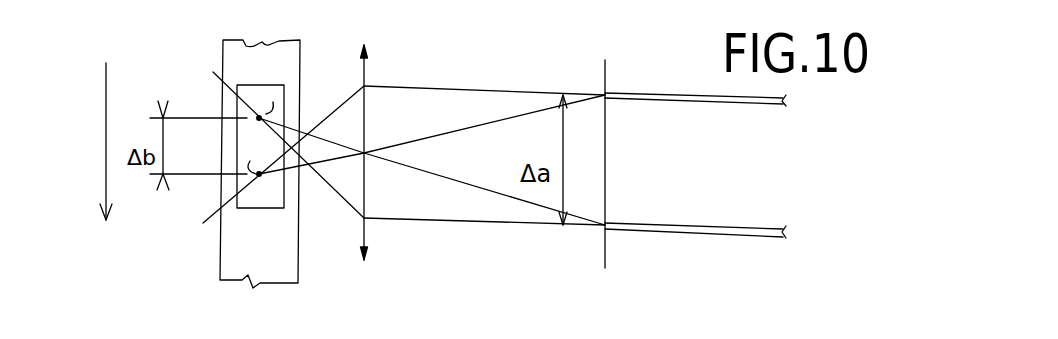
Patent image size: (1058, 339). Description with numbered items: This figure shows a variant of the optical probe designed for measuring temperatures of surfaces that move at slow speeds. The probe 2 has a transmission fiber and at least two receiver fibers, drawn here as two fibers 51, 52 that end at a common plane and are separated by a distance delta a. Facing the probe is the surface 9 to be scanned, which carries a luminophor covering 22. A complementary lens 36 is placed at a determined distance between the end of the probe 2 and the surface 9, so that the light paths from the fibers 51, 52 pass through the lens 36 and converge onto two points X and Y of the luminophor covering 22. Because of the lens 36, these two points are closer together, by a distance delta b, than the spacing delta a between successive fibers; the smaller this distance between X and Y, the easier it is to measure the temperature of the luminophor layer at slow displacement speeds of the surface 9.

The probe 2 is at (682, 168).
The surface to be scanned 9 is at (272, 265).
The luminophor covering 22 is at (278, 87).
The complementary lens 36 is at (367, 73).
The first optical fiber 51 is at (640, 97).
The second optical fiber 52 is at (660, 233).